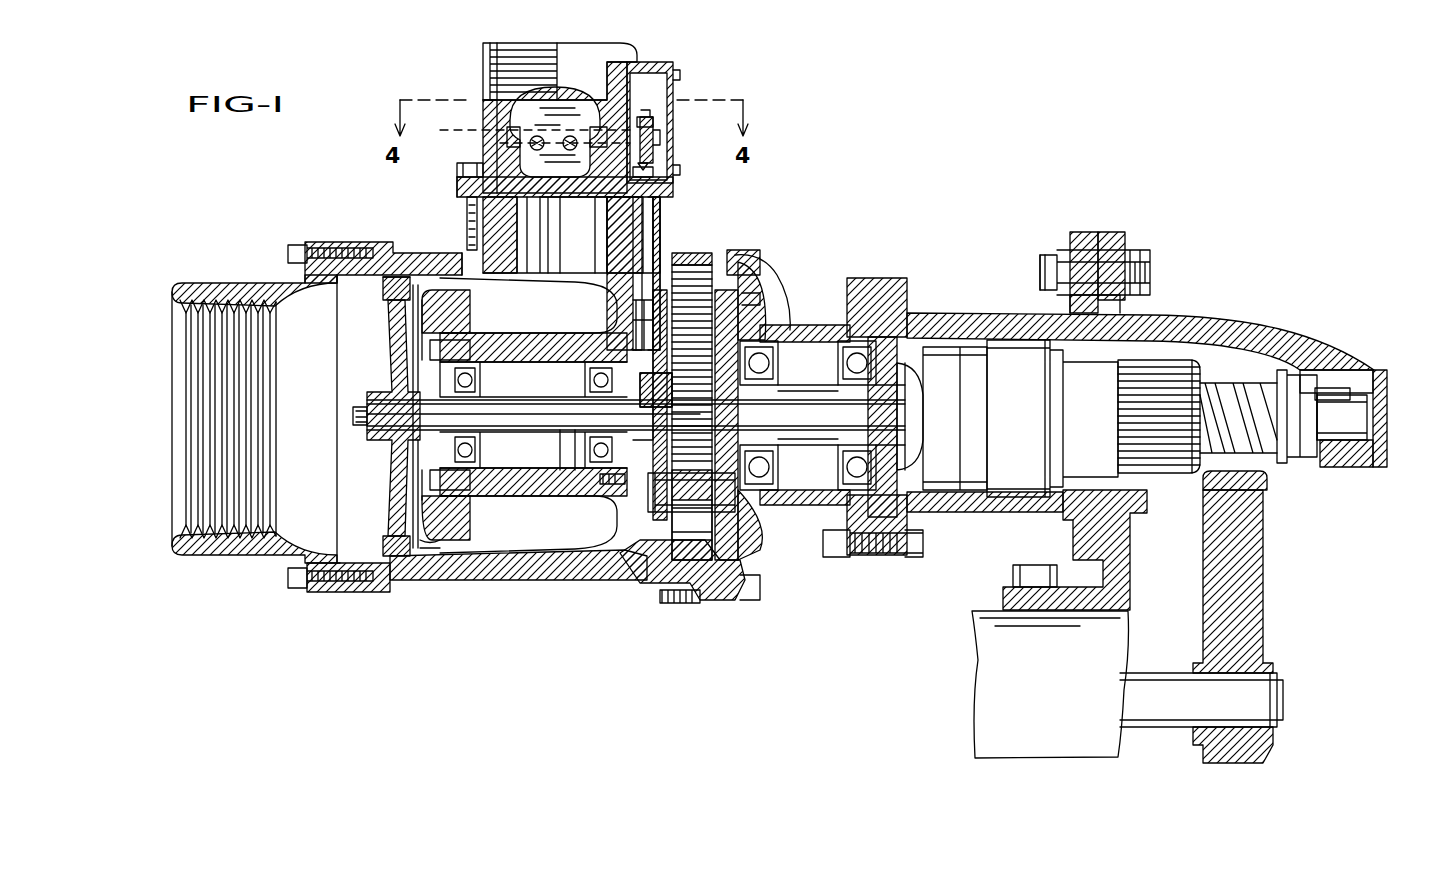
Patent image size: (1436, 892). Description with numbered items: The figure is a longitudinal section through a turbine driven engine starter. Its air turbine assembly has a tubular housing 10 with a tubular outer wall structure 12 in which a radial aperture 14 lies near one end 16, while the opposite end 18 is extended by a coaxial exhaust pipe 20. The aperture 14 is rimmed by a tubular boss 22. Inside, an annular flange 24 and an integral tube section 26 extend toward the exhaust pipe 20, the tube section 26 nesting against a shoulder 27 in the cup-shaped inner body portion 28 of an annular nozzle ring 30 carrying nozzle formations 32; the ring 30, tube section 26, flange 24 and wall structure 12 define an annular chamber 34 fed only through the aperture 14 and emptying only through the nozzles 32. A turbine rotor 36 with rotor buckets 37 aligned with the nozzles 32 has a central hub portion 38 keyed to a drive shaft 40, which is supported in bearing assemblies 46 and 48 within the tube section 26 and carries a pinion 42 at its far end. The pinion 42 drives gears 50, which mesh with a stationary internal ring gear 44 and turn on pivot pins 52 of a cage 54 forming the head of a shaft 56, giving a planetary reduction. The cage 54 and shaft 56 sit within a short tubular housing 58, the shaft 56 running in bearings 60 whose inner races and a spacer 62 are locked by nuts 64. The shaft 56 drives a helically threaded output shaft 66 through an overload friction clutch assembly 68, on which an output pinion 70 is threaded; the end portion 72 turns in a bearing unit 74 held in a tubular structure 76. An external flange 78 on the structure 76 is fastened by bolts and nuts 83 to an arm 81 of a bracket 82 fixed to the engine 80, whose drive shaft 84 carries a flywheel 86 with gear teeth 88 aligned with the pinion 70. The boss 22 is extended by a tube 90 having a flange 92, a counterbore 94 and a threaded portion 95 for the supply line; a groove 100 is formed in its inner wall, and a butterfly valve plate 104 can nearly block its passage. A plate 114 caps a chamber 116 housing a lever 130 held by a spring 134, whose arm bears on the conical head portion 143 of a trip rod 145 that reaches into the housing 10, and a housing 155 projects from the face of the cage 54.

The tubular housing 10 is at (430, 577).
The tubular outer wall structure 12 is at (430, 260).
The radial aperture 14 is at (582, 279).
The one end 16 is at (716, 252).
The opposite end 18 is at (341, 566).
The tubular exhaust pipe 20 is at (201, 281).
The tubular boss 22 is at (665, 202).
The annular flange 24 is at (617, 528).
The tube section 26 is at (532, 496).
The shoulder 27 is at (466, 522).
The cup-shaped inner body portion 28 is at (470, 320).
The annular nozzle ring 30 is at (462, 535).
The nozzle formations 32 is at (470, 304).
The annular chamber 34 is at (542, 317).
The turbine rotor 36 is at (376, 474).
The rotor buckets 37 is at (380, 286).
The central hub portion 38 is at (378, 392).
The drive shaft 40 is at (514, 430).
The pinion 42 is at (715, 402).
The stationary internal ring gear 44 is at (745, 270).
The bearing assemblies 46 is at (490, 390).
The bearing assemblies 48 is at (595, 452).
The gears 50 is at (672, 548).
The pivot pins 52 is at (712, 500).
The cage 54 is at (760, 303).
The shaft 56 is at (812, 412).
The short tubular housing 58 is at (769, 272).
The bearings 60 is at (778, 350).
The spacer 62 is at (822, 460).
The nuts 64 is at (925, 386).
The output shaft 66 is at (1243, 392).
The overload friction clutch assembly 68 is at (1026, 380).
The output pinion 70 is at (1170, 362).
The outermost projected end portion 72 is at (1343, 442).
The bearing unit 74 is at (1350, 392).
The tubular structure 76 is at (1153, 312).
The external flange 78 is at (1085, 232).
The engine 80 is at (1056, 688).
The arm 81 is at (1112, 232).
The bracket 82 is at (1135, 575).
The bolts and nuts 83 is at (1040, 270).
The engine drive shaft 84 is at (1160, 680).
The engine flywheel 86 is at (1252, 548).
The gear teeth 88 is at (1262, 477).
The tube 90 is at (478, 120).
The flange 92 is at (455, 188).
The counterbore 94 is at (590, 70).
The threaded portion 95 is at (505, 48).
The groove 100 is at (576, 188).
The butterfly valve plate 104 is at (545, 115).
The plate 114 is at (675, 62).
The chamber 116 is at (660, 140).
The lever 130 is at (653, 120).
The spring 134 is at (637, 125).
The conically shaped expanded head portion 143 is at (655, 168).
The trip rod 145 is at (628, 232).
The housing 155 is at (630, 322).